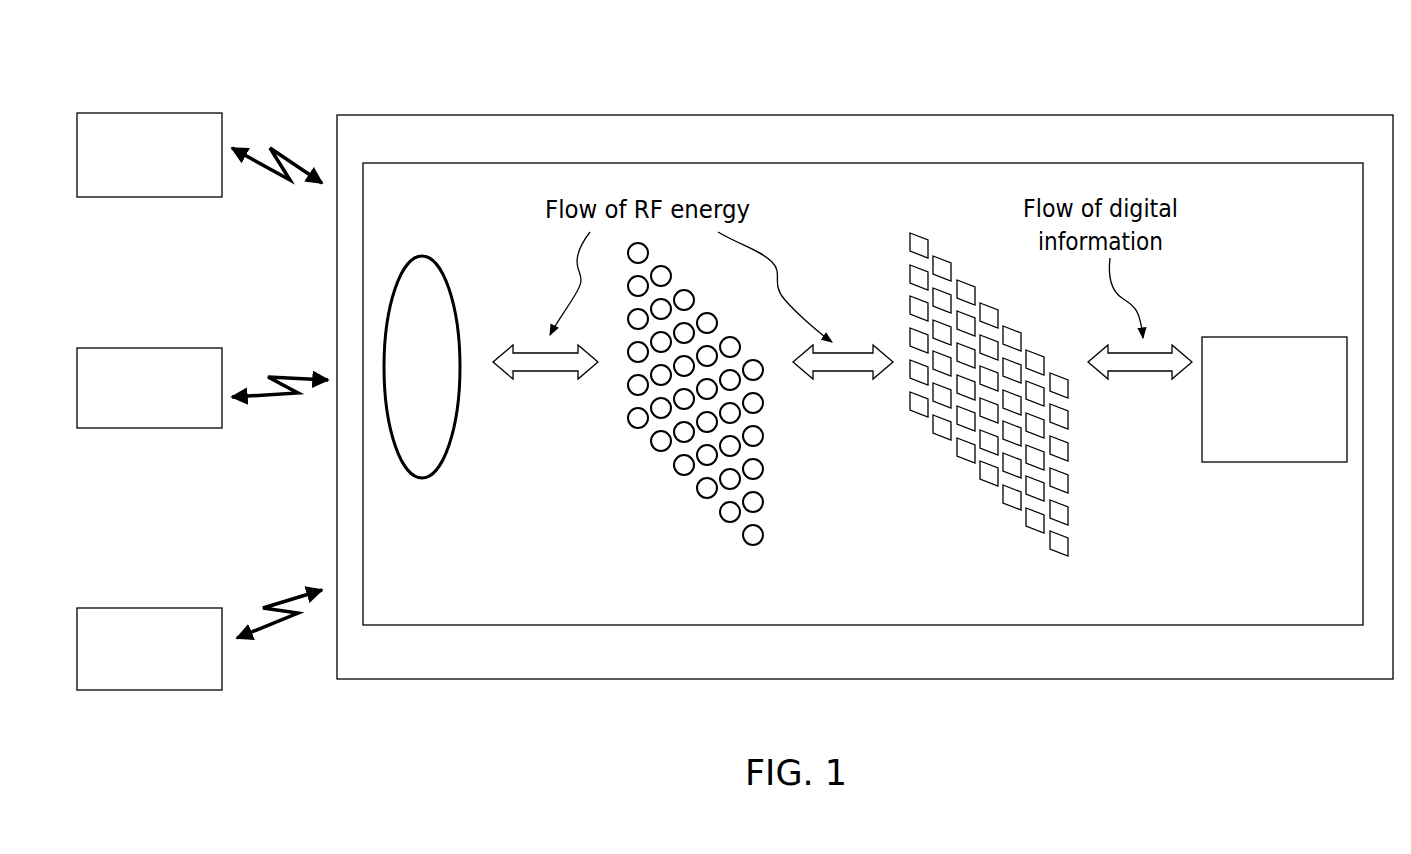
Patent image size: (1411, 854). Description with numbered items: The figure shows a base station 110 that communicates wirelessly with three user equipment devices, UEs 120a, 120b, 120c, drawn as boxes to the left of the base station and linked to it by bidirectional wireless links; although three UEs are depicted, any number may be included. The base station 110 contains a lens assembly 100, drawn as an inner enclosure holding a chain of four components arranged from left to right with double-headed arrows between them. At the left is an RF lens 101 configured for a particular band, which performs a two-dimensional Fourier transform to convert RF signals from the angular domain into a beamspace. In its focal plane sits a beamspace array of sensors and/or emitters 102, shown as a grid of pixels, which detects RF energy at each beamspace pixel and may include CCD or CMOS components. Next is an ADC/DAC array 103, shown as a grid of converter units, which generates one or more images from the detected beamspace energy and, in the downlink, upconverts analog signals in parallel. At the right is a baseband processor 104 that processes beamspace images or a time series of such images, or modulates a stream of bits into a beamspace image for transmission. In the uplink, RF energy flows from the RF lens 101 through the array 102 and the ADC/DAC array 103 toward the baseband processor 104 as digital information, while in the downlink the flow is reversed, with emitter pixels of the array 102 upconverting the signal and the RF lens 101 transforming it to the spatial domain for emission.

The lens assembly 100 is at (1050, 163).
The base station 110 is at (895, 115).
The RF lens 101 is at (408, 482).
The beamspace array of sensors and/or emitters 102 is at (713, 522).
The ADC/DAC array 103 is at (1008, 505).
The baseband processor 104 is at (1212, 465).
The UE 120a is at (135, 113).
The UE 120b is at (135, 348).
The UE 120c is at (135, 608).